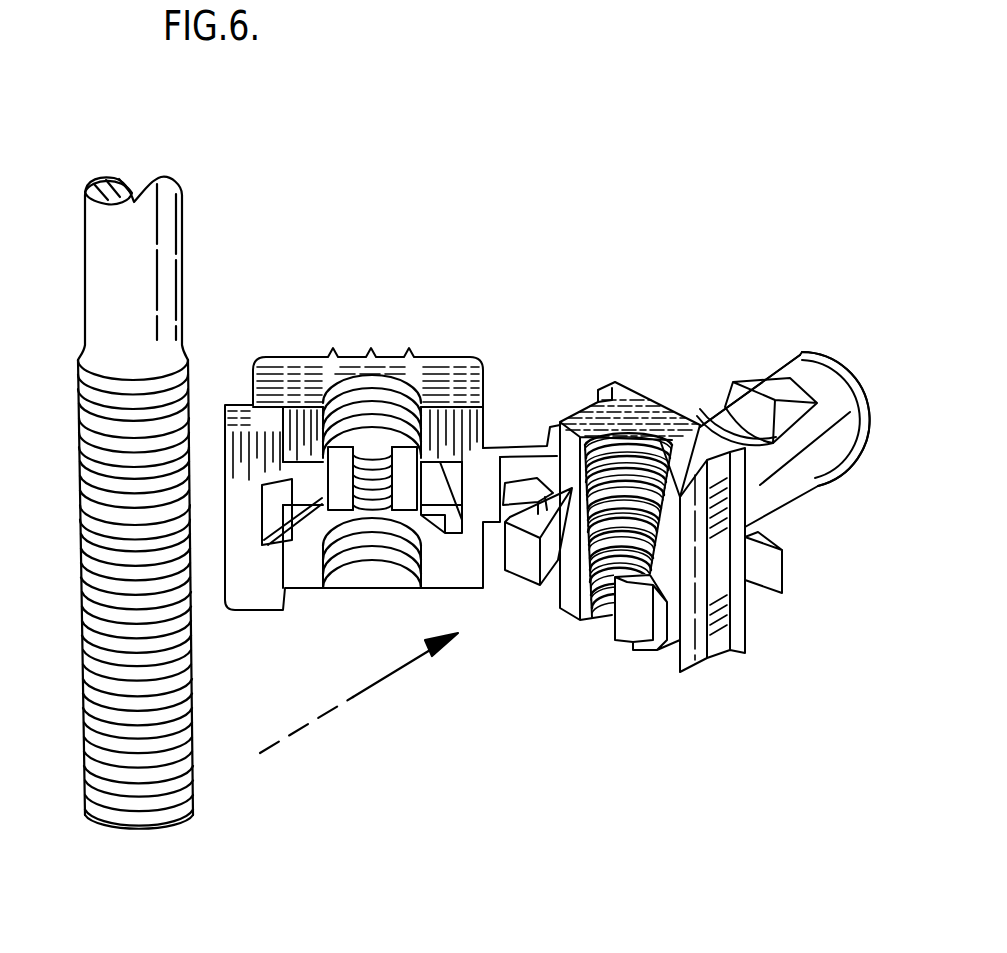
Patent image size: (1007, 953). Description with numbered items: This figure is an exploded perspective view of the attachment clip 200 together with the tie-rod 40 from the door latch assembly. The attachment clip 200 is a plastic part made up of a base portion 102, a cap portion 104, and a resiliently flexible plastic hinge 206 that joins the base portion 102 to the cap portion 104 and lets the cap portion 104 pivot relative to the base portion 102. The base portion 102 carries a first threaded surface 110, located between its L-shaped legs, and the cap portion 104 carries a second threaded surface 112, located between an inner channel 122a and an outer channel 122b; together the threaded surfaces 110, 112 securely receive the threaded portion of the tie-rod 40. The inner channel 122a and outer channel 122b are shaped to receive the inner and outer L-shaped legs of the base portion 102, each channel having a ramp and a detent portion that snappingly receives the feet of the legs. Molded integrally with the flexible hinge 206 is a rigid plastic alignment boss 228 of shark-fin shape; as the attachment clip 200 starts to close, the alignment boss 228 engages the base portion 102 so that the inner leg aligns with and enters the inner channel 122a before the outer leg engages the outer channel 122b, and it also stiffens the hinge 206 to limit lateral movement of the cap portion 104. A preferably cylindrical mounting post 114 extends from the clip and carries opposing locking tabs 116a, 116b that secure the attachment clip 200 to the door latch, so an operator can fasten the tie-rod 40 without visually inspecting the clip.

The tie-rod 40 is at (84, 257).
The cap portion 104 is at (434, 346).
The second threaded surface 112 is at (370, 552).
The inner channel 122a is at (434, 487).
The outer channel 122b is at (292, 482).
The flexible hinge 206 is at (535, 438).
The base portion 102 is at (652, 388).
The alignment boss 228 is at (507, 440).
The first threaded surface 110 is at (607, 622).
The locking tab 116a is at (755, 378).
The locking tab 116b is at (790, 498).
The mounting post 114 is at (848, 356).
The attachment clip 200 is at (621, 690).